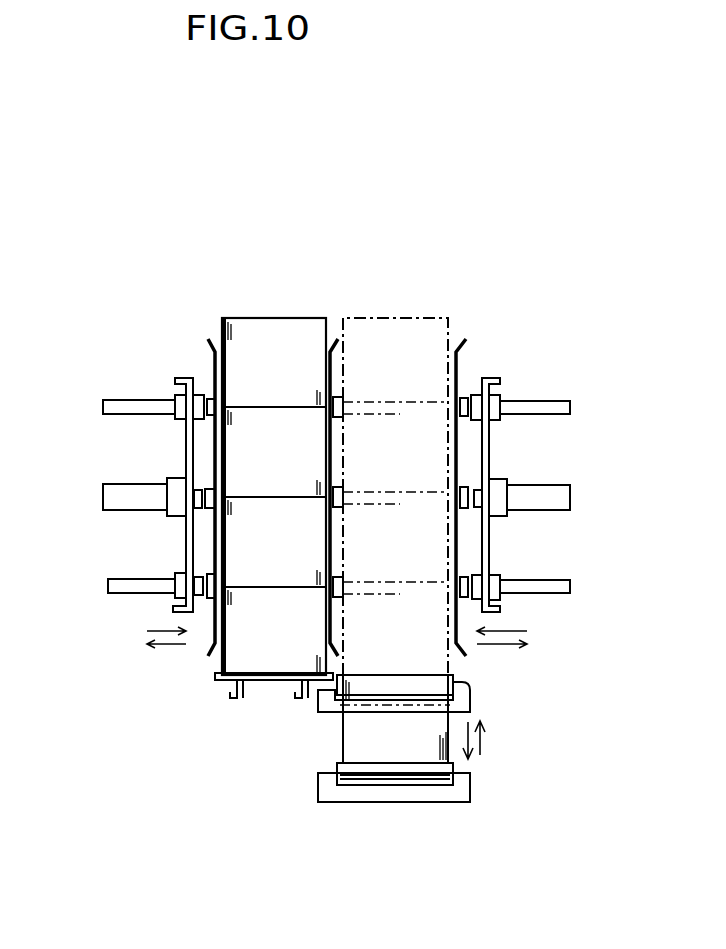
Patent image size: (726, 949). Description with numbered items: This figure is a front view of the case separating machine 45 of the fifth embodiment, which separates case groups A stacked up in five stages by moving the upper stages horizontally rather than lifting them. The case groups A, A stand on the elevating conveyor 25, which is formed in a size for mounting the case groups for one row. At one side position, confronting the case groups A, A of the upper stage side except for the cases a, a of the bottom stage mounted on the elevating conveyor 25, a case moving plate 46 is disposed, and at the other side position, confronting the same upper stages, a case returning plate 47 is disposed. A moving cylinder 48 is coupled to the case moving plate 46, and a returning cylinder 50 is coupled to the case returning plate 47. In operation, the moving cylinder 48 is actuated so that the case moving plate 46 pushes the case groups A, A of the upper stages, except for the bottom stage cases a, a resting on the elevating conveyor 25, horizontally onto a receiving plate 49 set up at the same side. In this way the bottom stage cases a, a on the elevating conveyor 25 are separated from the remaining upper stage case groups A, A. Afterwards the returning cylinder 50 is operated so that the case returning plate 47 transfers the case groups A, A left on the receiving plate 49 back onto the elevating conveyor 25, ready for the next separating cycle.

The case group A is at (363, 315).
The case a is at (227, 410).
The elevating conveyor 25 is at (467, 770).
The case separating machine 45 is at (535, 353).
The case moving plate 46 is at (460, 467).
The case returning plate 47 is at (213, 457).
The moving cylinder 48 is at (545, 505).
The receiving plate 49 is at (265, 688).
The returning cylinder 50 is at (128, 503).